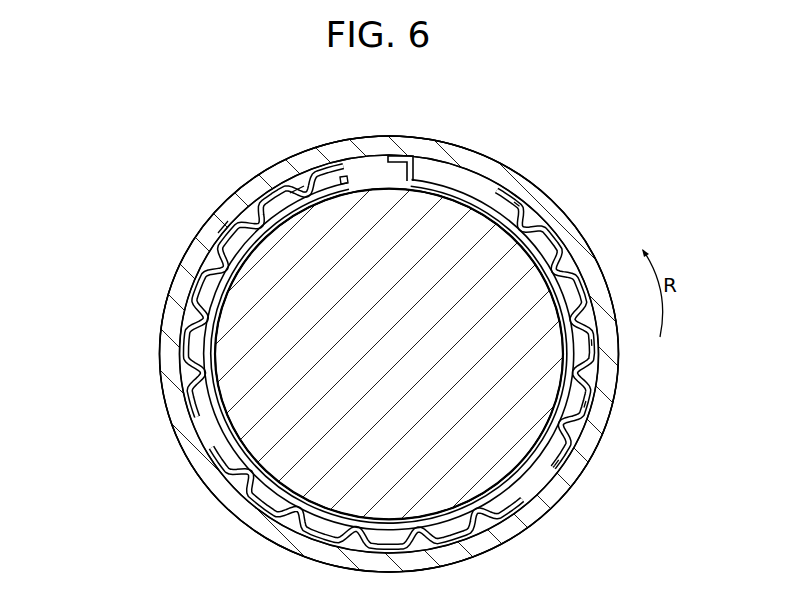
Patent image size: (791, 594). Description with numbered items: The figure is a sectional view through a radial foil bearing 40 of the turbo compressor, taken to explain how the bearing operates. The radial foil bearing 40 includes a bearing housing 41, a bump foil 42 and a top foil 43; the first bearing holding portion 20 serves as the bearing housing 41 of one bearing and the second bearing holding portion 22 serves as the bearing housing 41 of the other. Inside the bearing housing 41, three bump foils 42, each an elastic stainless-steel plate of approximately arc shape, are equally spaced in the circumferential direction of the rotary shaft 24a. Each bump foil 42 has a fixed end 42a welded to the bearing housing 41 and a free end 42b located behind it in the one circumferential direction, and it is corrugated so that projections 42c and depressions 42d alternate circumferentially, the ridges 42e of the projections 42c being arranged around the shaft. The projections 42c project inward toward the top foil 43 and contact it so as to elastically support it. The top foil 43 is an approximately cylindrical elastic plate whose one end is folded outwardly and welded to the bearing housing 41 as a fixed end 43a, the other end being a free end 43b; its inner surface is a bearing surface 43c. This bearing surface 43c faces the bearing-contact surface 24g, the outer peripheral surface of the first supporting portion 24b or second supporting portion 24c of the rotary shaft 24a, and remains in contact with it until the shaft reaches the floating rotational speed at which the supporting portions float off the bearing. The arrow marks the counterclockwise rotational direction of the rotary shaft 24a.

The radial foil bearing 40 is at (524, 160).
The bearing housing 41 is at (610, 363).
The first bearing holding portion 20 is at (389, 354).
The second bearing holding portion 22 is at (389, 354).
The bump foil 42 is at (566, 255).
The fixed end 42a is at (527, 180).
The free end 42b is at (562, 465).
The projection 42c is at (588, 383).
The depression 42d is at (593, 407).
The ridge 42e is at (538, 458).
The top foil 43 is at (437, 170).
The fixed end 43a is at (411, 154).
The free end 43b is at (345, 174).
The bearing surface 43c is at (297, 195).
The rotary shaft 24a is at (246, 293).
The first supporting portion 24b is at (389, 354).
The second supporting portion 24c is at (389, 354).
The bearing-contact surface 24g is at (223, 226).